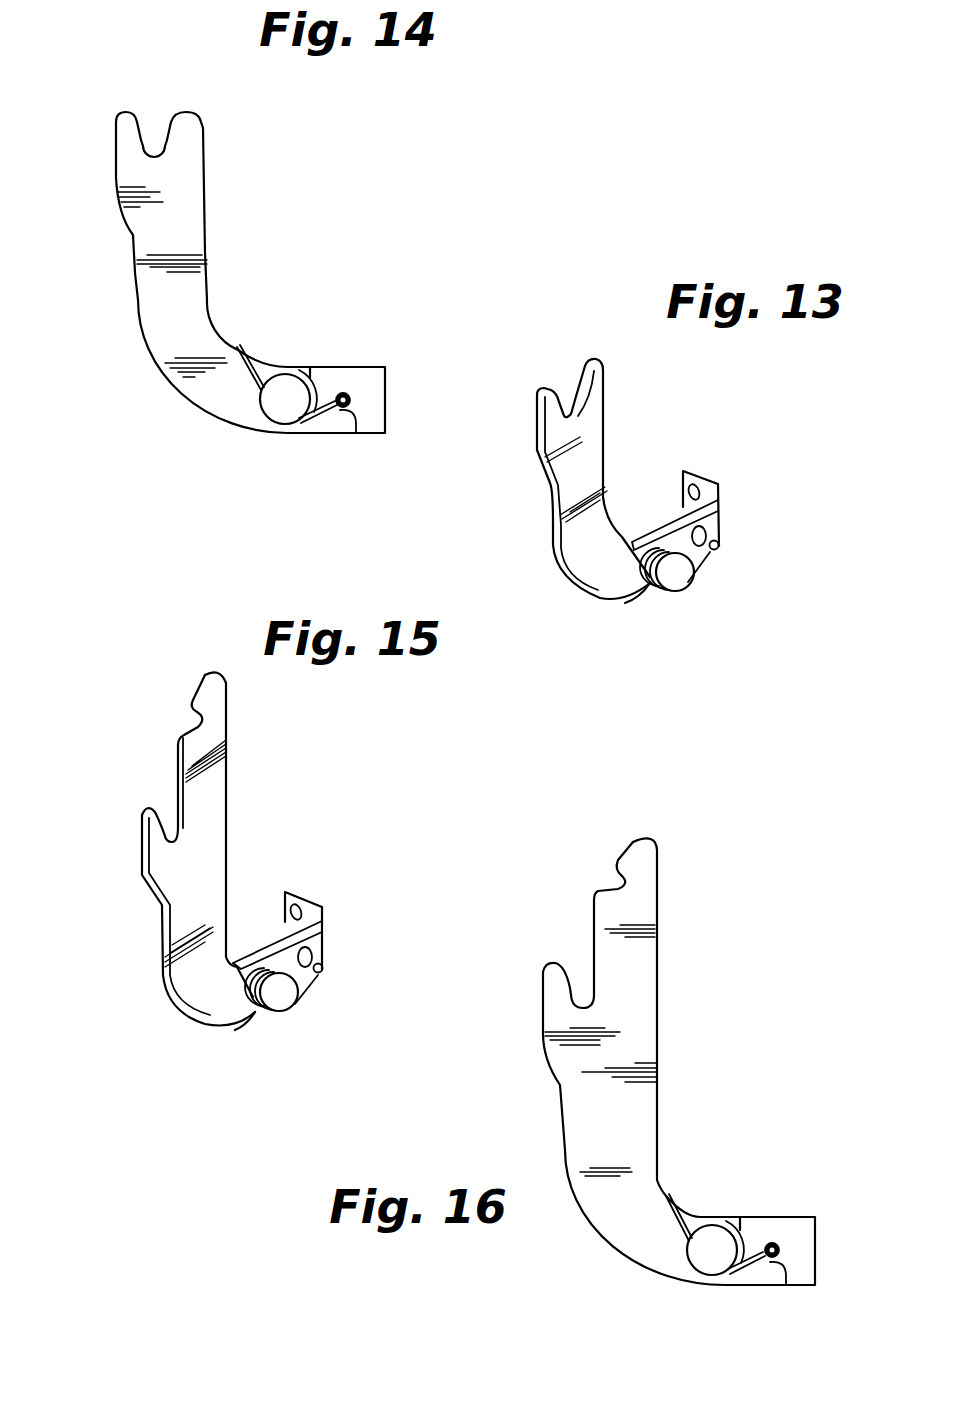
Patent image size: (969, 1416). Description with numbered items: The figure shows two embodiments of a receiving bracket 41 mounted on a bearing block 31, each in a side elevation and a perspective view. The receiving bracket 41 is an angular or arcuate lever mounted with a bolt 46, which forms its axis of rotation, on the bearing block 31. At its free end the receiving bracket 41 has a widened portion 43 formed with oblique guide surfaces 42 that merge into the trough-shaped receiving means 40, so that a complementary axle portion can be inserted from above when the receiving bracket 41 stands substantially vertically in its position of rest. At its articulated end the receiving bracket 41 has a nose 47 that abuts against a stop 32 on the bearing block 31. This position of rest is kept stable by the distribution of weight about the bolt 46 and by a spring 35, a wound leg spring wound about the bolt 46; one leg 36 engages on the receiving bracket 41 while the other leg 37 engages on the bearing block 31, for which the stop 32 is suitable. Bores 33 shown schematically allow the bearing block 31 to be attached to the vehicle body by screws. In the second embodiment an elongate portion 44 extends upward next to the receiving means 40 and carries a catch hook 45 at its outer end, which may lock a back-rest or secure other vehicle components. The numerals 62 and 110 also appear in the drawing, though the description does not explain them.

In FIG. 14, the bearing block 31 is at (373, 416).
In FIG. 13, the bearing block 31 is at (726, 500).
In FIG. 15, the bearing block 31 is at (322, 926).
In FIG. 16, the bearing block 31 is at (810, 1249).
In FIG. 14, the stop 32 is at (366, 384).
In FIG. 13, the stop 32 is at (716, 542).
In FIG. 15, the stop 32 is at (320, 966).
In FIG. 16, the stop 32 is at (778, 1243).
In FIG. 13, the bores 33 is at (683, 493).
In FIG. 15, the bores 33 is at (285, 913).
In FIG. 13, the spring 35 is at (636, 584).
In FIG. 15, the spring 35 is at (236, 1008).
In FIG. 14, the leg 36 is at (247, 353).
In FIG. 16, the leg 36 is at (673, 1205).
In FIG. 14, the other leg 37 is at (336, 396).
In FIG. 16, the other leg 37 is at (763, 1246).
In FIG. 14, the receiving means 40 is at (155, 105).
In FIG. 13, the receiving means 40 is at (559, 374).
In FIG. 15, the receiving means 40 is at (163, 797).
In FIG. 14, the receiving bracket 41 is at (180, 235).
In FIG. 13, the receiving bracket 41 is at (583, 553).
In FIG. 15, the receiving bracket 41 is at (183, 891).
In FIG. 16, the receiving bracket 41 is at (603, 1145).
In FIG. 14, the oblique guide surfaces 42 is at (122, 130).
In FIG. 14, the widened portion 43 is at (178, 183).
In FIG. 15, the elongate portion 44 is at (212, 778).
In FIG. 16, the elongate portion 44 is at (623, 957).
In FIG. 15, the catch hook 45 is at (176, 709).
In FIG. 16, the catch hook 45 is at (603, 873).
In FIG. 14, the bolt 46 is at (288, 395).
In FIG. 13, the bolt 46 is at (680, 573).
In FIG. 15, the bolt 46 is at (283, 997).
In FIG. 16, the bolt 46 is at (714, 1246).
In FIG. 14, the nose 47 is at (339, 424).
In FIG. 16, the nose 47 is at (768, 1273).
In FIG. 13, the prong 62 is at (582, 375).
In FIG. 16, the notch 110 is at (578, 960).